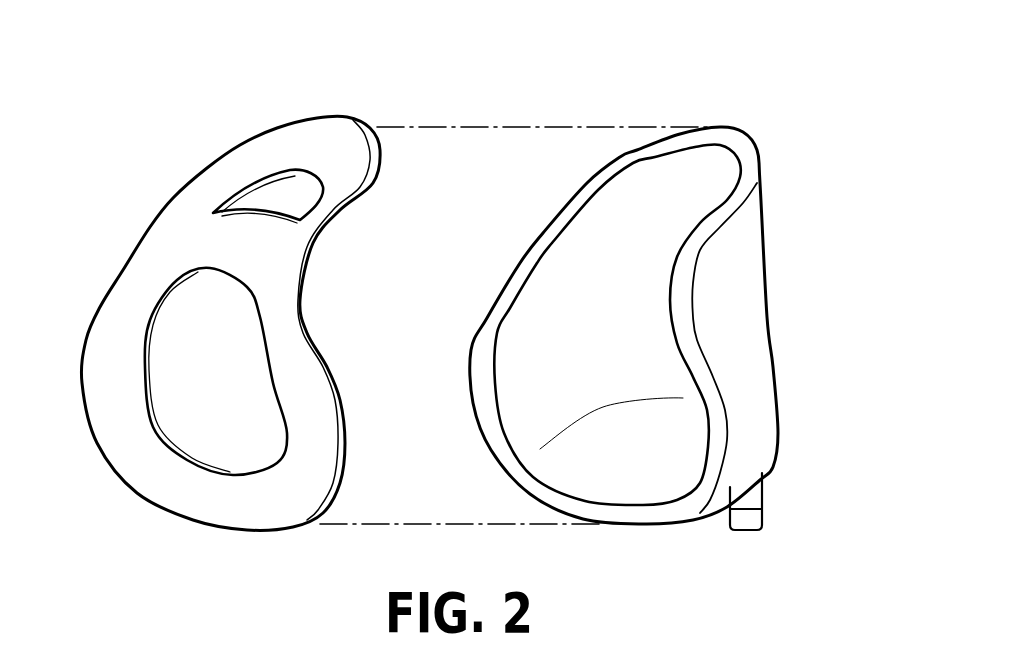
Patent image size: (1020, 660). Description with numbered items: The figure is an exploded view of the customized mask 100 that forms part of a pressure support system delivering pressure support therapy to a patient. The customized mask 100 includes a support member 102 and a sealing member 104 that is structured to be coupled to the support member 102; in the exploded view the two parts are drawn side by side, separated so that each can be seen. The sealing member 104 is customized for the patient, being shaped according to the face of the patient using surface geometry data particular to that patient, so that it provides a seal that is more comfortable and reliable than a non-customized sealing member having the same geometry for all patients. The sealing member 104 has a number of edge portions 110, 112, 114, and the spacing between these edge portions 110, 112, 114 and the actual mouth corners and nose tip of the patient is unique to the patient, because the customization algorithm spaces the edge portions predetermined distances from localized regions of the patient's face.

The customized mask 100 is at (800, 105).
The support member 102 is at (780, 248).
The sealing member 104 is at (255, 294).
The edge portion 110 is at (345, 445).
The edge portion 112 is at (273, 463).
The edge portion 114 is at (300, 171).